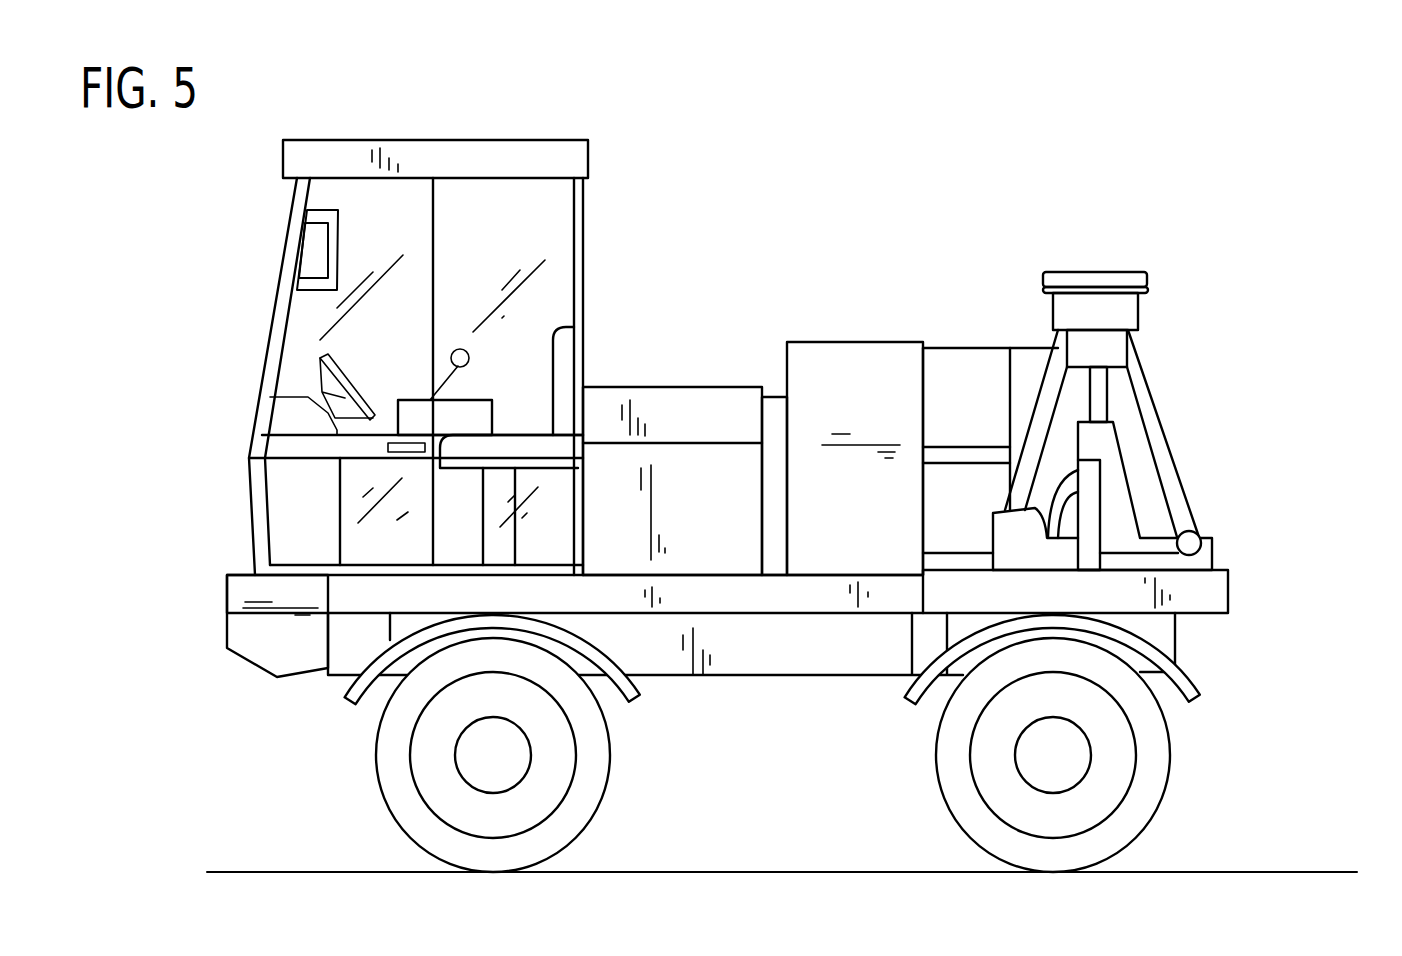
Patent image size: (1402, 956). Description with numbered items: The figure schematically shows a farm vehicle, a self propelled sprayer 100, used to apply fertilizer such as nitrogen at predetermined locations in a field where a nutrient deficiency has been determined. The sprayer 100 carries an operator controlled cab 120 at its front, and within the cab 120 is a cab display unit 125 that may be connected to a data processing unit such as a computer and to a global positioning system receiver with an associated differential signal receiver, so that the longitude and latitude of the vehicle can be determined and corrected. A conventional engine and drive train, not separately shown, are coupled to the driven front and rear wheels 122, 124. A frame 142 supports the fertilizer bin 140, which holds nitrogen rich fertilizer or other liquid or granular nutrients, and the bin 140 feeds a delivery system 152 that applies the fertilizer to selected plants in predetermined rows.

The self propelled sprayer 100 is at (675, 273).
The operator controlled cab 120 is at (488, 193).
The cab display unit 125 is at (315, 228).
The fertilizer bin 140 is at (842, 350).
The frame 142 is at (780, 662).
The front wheel 122 is at (585, 803).
The rear wheel 124 is at (1138, 812).
The delivery system 152 is at (1115, 467).